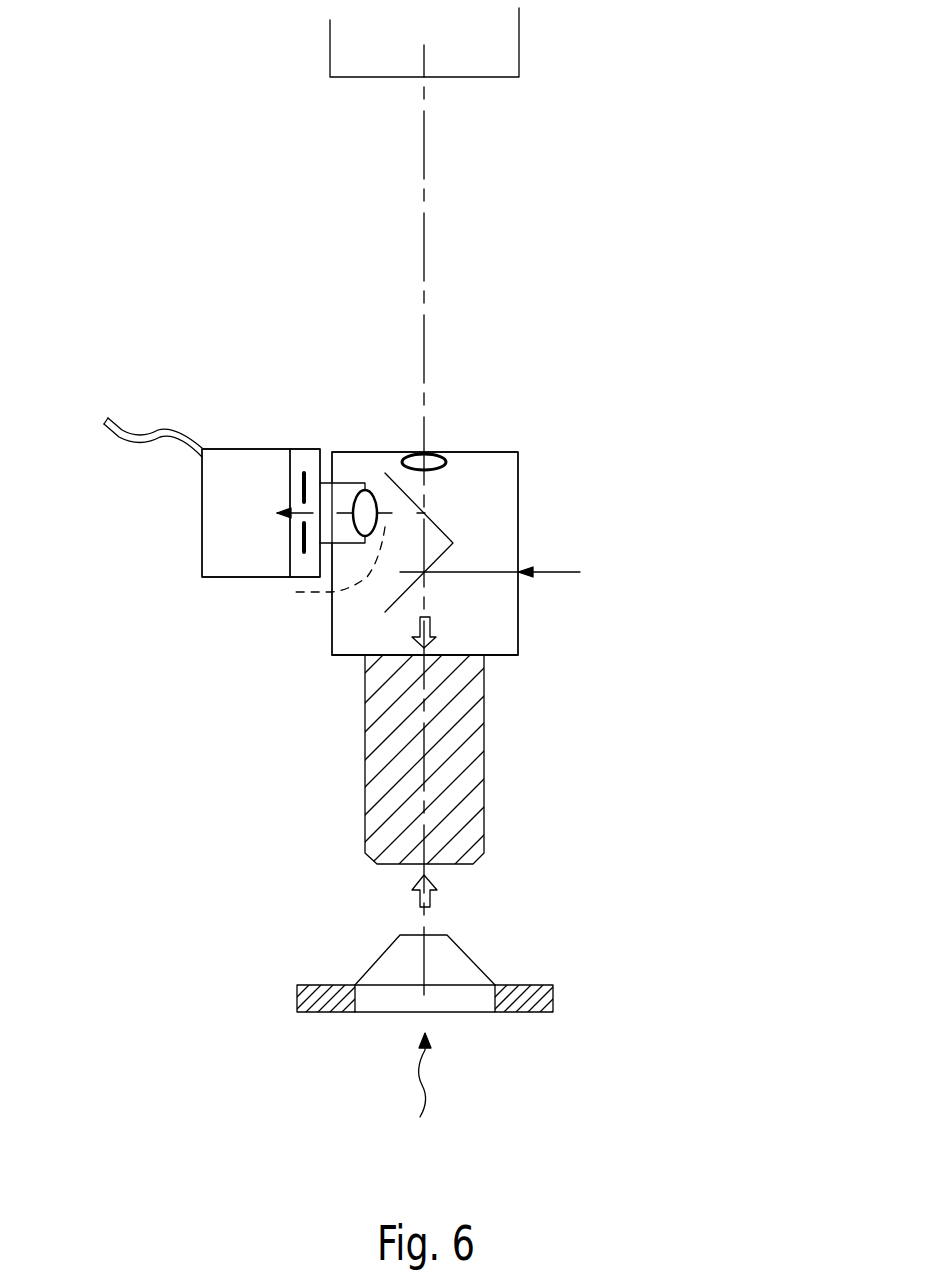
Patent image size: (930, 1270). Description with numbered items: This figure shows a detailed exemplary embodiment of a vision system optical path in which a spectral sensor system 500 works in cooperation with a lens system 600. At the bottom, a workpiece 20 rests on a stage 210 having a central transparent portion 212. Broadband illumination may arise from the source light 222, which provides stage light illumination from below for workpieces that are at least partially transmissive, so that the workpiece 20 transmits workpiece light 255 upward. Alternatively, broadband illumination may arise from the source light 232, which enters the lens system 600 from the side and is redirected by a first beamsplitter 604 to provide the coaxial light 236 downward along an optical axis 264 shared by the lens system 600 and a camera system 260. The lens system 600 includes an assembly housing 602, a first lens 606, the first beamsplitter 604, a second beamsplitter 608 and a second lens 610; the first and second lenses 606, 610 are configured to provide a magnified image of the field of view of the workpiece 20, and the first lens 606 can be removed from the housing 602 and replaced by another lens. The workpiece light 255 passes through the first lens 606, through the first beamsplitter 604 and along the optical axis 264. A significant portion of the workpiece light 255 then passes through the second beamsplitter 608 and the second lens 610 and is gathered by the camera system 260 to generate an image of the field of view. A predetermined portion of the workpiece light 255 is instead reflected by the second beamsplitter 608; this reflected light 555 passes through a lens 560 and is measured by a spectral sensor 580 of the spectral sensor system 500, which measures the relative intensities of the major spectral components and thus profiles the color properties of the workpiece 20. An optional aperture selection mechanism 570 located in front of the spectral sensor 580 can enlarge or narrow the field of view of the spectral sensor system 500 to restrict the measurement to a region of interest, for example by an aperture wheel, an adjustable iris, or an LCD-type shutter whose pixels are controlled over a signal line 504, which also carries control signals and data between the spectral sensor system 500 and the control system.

The camera system 260 is at (519, 45).
The optical axis 264 is at (424, 258).
The spectral sensor system 500 is at (194, 356).
The signal line 504 is at (130, 440).
The spectral sensor 580 is at (207, 532).
The aperture selection mechanism 570 is at (300, 457).
The lens 560 is at (370, 490).
The reflected light 555 is at (314, 568).
The assembly housing 602 is at (345, 655).
The first beamsplitter 604 is at (400, 600).
The first lens 606 is at (484, 722).
The second beamsplitter 608 is at (443, 528).
The second lens 610 is at (435, 452).
The lens system 600 is at (303, 757).
The source light 232 is at (563, 572).
The coaxial light 236 is at (430, 627).
The workpiece light 255 is at (430, 897).
The workpiece 20 is at (467, 953).
The stage 210 is at (578, 985).
The central transparent portion 212 is at (397, 1012).
The source light 222 is at (432, 1070).